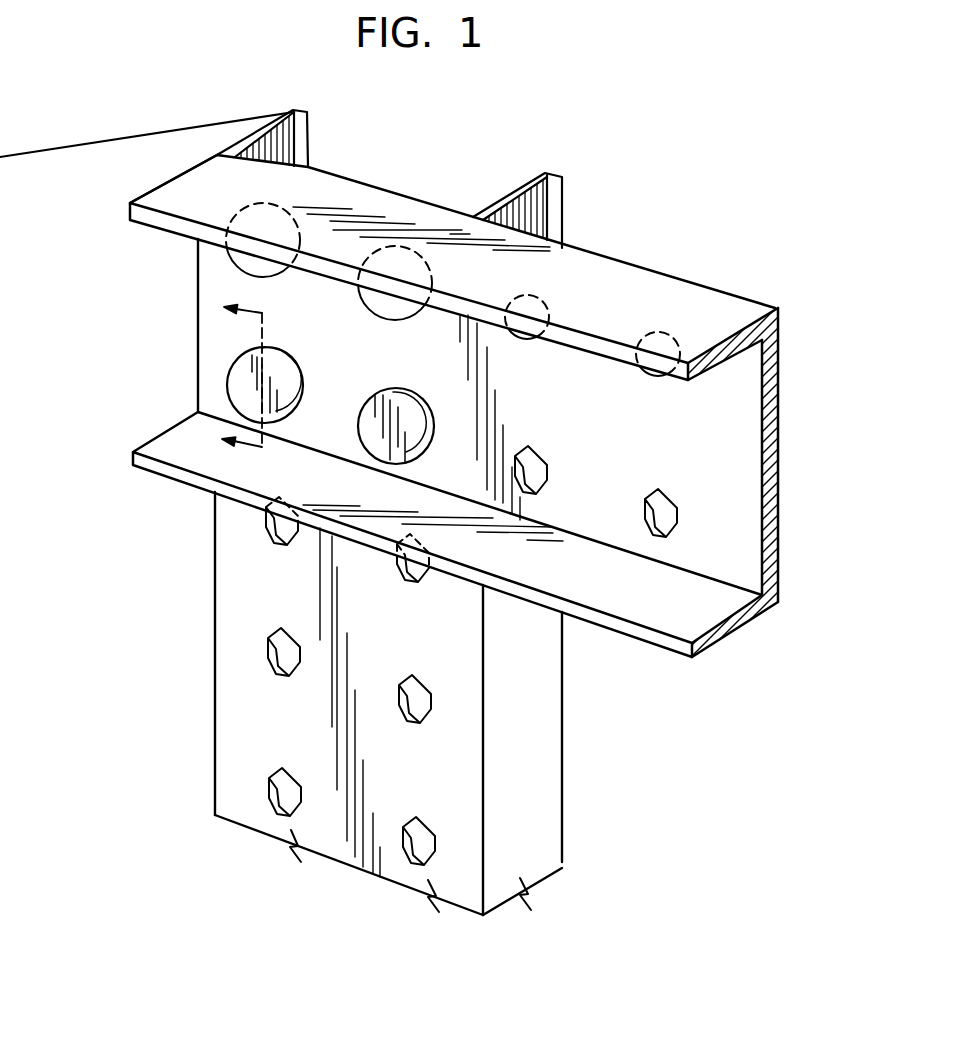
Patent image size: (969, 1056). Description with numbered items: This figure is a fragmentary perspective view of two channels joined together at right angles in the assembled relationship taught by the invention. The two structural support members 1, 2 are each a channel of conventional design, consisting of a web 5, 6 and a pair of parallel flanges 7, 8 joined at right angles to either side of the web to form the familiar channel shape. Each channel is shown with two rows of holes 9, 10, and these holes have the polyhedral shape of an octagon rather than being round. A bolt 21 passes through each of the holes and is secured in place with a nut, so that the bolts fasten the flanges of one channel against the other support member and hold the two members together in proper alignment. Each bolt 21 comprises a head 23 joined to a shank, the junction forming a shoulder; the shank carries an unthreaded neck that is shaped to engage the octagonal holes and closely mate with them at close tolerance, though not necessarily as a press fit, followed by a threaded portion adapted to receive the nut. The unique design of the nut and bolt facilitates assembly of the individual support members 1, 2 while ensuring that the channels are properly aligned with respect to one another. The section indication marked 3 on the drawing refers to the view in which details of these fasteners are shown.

The support member 1 is at (484, 356).
The support member 2 is at (205, 793).
The section line 3- 3 is at (262, 393).
The web 5 is at (773, 473).
The web 6 is at (373, 190).
The flange 7 is at (717, 320).
The flange 8 is at (267, 132).
The holes 9 is at (532, 458).
The holes 10 is at (350, 717).
The bolt 21 is at (219, 360).
The head 23 is at (245, 389).